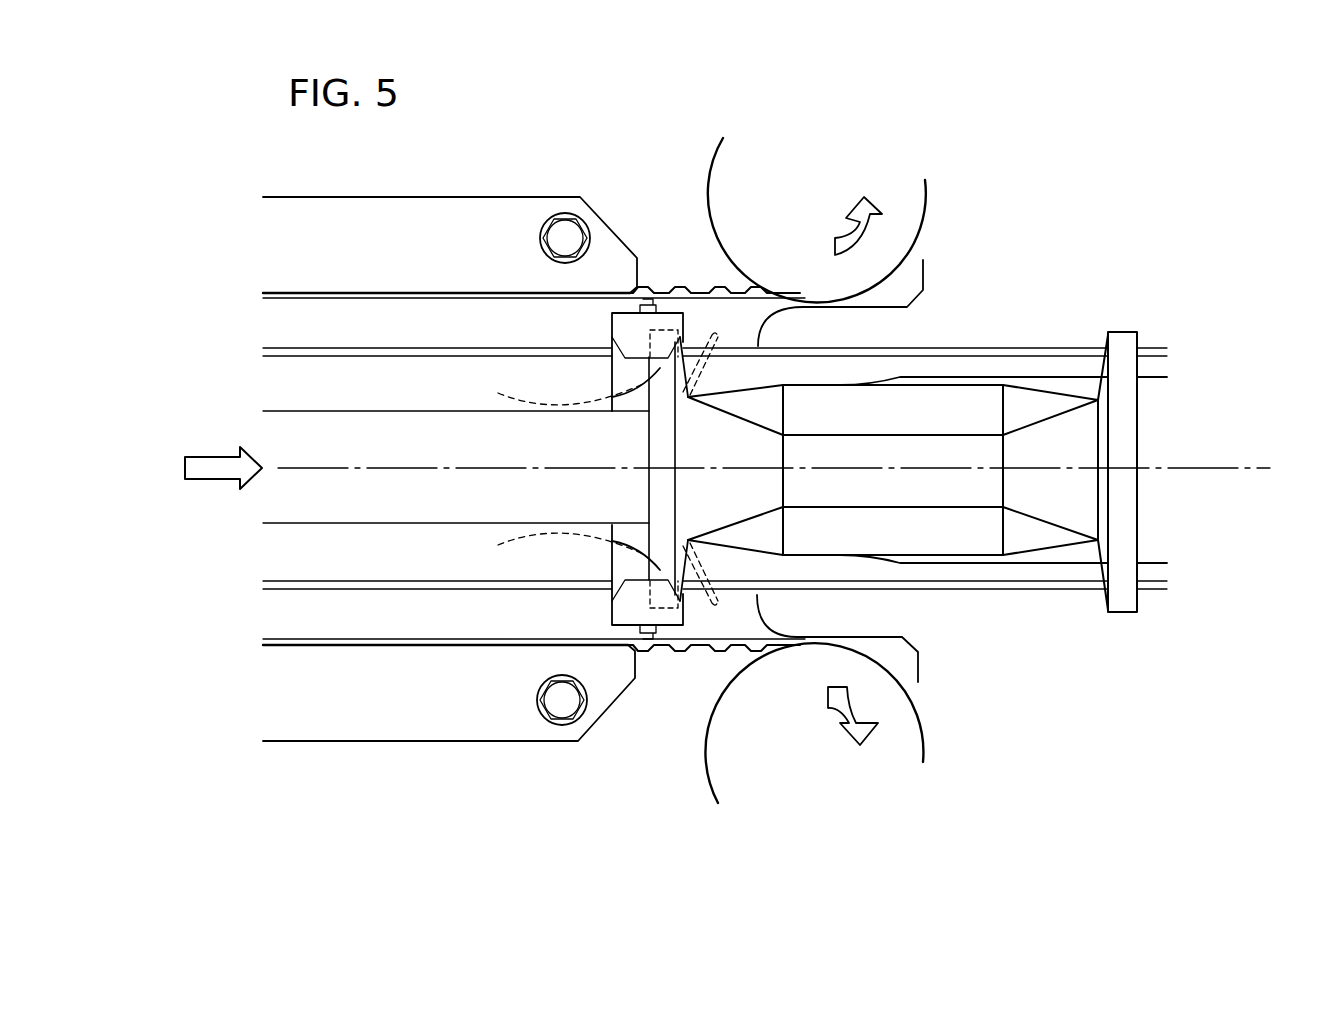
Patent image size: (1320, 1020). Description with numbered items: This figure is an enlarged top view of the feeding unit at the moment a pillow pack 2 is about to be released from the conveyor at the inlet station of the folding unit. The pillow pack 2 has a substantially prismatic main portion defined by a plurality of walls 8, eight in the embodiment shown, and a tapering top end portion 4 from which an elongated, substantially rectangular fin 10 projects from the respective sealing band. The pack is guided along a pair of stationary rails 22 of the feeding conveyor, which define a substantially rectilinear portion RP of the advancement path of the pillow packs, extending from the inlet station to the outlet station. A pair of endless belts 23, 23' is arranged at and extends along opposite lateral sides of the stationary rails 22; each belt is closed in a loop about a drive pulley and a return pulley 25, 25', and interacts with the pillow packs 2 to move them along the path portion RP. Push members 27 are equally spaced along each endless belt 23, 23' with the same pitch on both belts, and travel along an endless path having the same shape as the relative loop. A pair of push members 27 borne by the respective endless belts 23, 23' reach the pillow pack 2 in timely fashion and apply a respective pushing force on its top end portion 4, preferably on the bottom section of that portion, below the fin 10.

The pillow pack 2 is at (940, 453).
The top end portion 4 is at (700, 440).
The walls 8 is at (980, 425).
The fin 10 is at (660, 495).
The stationary rails 22 is at (282, 377).
The endless belt 23 is at (715, 251).
The endless belt 23' is at (714, 702).
The return pulley 25 is at (790, 215).
The return pulley 25' is at (848, 699).
The push members 27 is at (632, 328).
The rectilinear portion RP is at (442, 467).